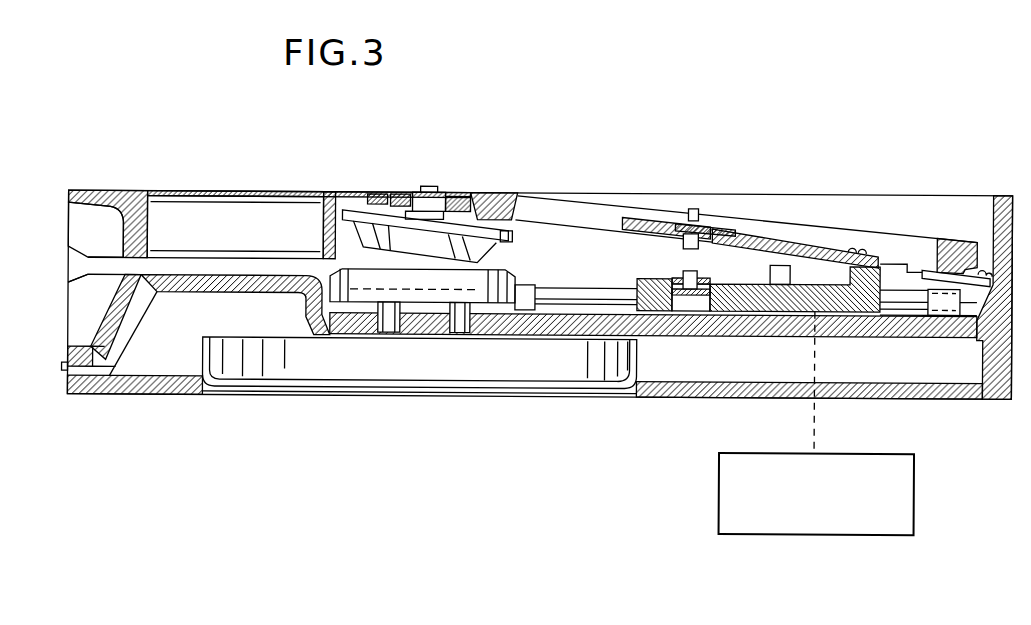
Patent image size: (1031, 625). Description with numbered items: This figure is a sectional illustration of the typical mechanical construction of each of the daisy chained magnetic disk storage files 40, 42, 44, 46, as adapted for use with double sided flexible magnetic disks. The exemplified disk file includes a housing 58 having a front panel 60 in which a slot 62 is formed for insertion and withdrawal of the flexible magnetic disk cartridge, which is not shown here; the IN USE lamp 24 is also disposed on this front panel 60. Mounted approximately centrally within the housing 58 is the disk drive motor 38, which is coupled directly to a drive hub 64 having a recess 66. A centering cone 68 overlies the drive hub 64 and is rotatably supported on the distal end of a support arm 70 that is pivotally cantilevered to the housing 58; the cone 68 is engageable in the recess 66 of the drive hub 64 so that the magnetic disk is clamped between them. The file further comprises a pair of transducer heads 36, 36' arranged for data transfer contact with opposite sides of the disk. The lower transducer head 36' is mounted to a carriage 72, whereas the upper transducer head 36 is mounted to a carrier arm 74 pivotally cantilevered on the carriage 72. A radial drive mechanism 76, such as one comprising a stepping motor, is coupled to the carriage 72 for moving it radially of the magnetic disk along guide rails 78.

The IN USE lamp 24 is at (60, 374).
The upper transducer head 36 is at (715, 244).
The lower transducer head 36' is at (769, 277).
The disk drive motor 38 is at (432, 381).
The storage file 40 is at (754, 190).
The storage file 42 is at (754, 190).
The storage file 44 is at (754, 190).
The storage file 46 is at (738, 158).
The housing 58 is at (72, 193).
The front panel 60 is at (68, 233).
The slot 62 is at (68, 285).
The drive hub 64 is at (512, 271).
The recess 66 is at (375, 277).
The centering cone 68 is at (500, 256).
The support arm 70 is at (483, 193).
The carriage 72 is at (806, 293).
The carrier arm 74 is at (794, 238).
The radial drive mechanism 76 is at (915, 474).
The guide rails 78 is at (913, 297).